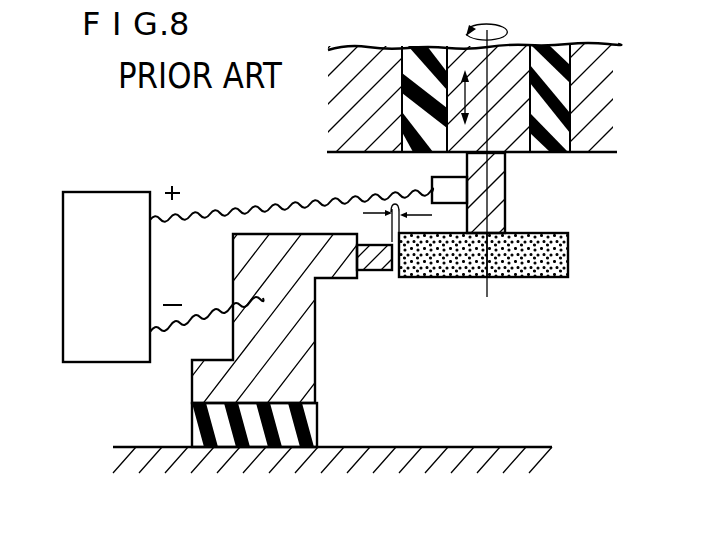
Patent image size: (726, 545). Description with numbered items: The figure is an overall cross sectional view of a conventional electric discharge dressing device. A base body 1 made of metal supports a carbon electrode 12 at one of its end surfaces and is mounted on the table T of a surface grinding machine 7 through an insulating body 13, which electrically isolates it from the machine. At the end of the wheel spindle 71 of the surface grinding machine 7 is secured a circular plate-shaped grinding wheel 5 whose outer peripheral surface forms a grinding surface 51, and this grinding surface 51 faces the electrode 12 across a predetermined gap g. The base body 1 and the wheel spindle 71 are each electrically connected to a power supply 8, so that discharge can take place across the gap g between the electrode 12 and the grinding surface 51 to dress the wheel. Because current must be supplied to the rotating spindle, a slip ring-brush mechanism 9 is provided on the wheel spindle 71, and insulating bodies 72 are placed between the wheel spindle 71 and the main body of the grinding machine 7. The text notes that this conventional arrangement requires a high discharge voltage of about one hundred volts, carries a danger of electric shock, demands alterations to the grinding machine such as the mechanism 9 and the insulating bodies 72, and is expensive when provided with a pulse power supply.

The base body 1 is at (306, 357).
The grinding wheel 5 is at (532, 264).
The surface grinding machine 7 is at (367, 72).
The power supply 8 is at (63, 275).
The slip ring-brush mechanism 9 is at (441, 188).
The carbon electrode 12 is at (383, 268).
The insulating body 13 is at (212, 416).
The grinding surface 51 is at (453, 268).
The wheel spindle 71 is at (497, 200).
The insulating bodies 72 is at (439, 56).
The gap g is at (408, 217).
The table T is at (137, 462).